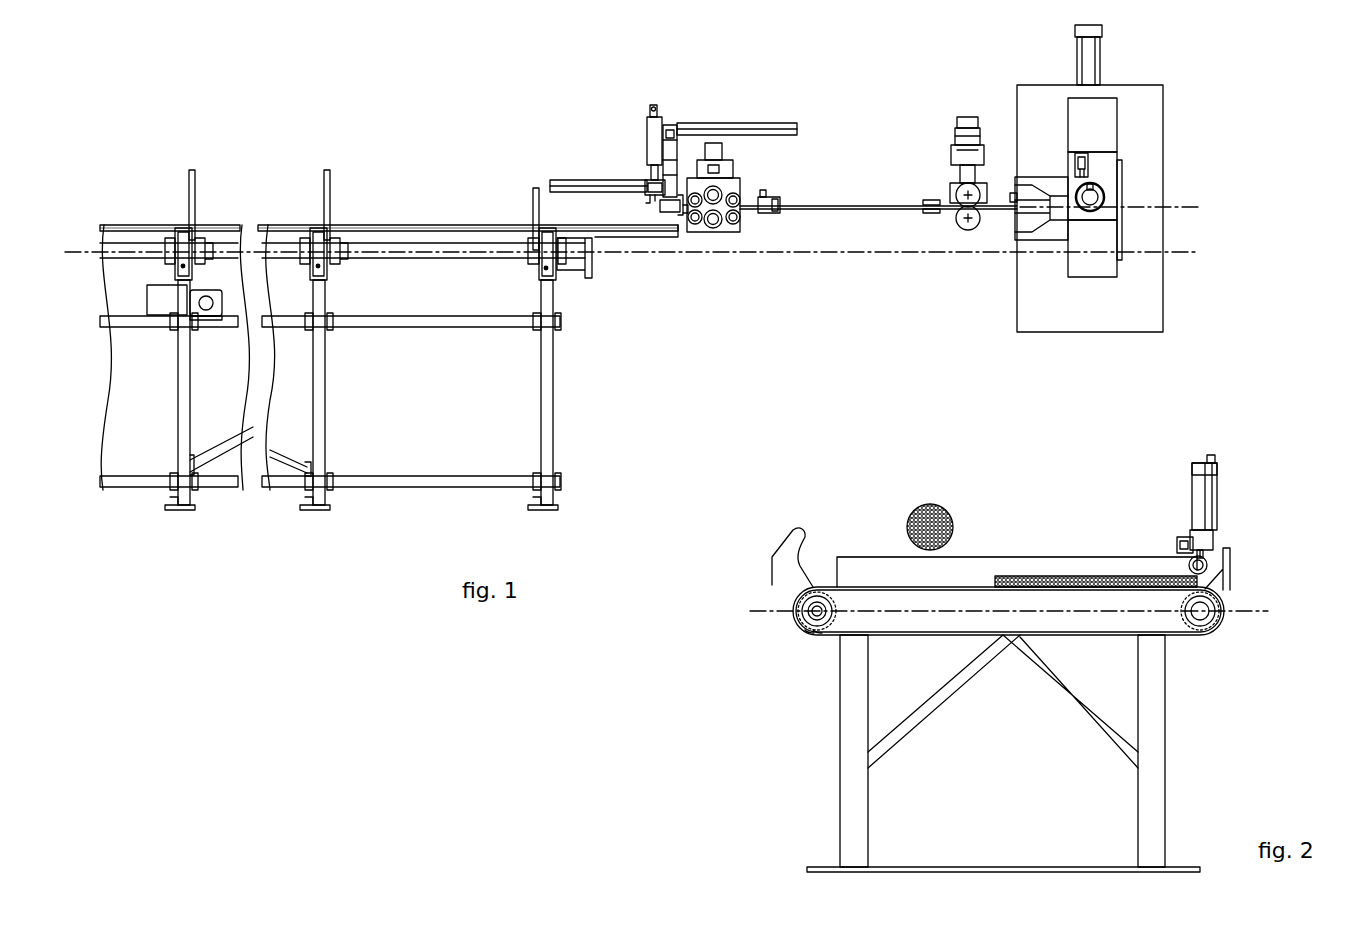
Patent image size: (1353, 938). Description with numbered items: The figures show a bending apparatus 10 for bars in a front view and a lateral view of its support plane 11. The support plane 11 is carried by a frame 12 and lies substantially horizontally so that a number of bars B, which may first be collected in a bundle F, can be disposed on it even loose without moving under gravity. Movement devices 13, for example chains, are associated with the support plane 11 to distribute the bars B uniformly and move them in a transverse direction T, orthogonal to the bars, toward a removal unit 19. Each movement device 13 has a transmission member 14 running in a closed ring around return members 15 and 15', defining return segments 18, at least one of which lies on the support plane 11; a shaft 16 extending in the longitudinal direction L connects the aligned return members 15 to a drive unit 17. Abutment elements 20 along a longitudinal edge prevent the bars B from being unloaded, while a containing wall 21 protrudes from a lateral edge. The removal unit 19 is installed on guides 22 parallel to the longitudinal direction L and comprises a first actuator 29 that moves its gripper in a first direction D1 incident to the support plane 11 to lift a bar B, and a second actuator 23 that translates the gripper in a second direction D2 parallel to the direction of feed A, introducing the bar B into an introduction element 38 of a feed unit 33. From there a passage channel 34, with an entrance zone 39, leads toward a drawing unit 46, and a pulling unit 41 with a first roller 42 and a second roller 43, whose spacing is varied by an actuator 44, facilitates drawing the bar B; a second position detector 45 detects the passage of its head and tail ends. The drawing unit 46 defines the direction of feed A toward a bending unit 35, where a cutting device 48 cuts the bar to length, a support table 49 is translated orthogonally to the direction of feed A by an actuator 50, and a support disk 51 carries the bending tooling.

In FIG. 1, the bending apparatus 10 is at (380, 114).
In FIG. 1, the support plane 11 is at (155, 220).
In FIG. 2, the support plane 11 is at (858, 583).
In FIG. 1, the frame 12 is at (557, 405).
In FIG. 2, the frame 12 is at (1172, 728).
In FIG. 1, the movement devices 13 is at (205, 272).
In FIG. 2, the movement devices 13 is at (815, 645).
In FIG. 2, the transmission member 14 is at (1050, 640).
In FIG. 1, the return members 15 is at (309, 303).
In FIG. 2, the return members 15 is at (803, 628).
In FIG. 2, the return members 15' is at (1215, 633).
In FIG. 1, the shaft 16 is at (470, 259).
In FIG. 1, the drive unit 17 is at (143, 299).
In FIG. 2, the return segments 18 is at (898, 585).
In FIG. 1, the removal unit 19 is at (636, 98).
In FIG. 2, the removal unit 19 is at (1222, 470).
In FIG. 1, the abutment elements 20 is at (194, 203).
In FIG. 2, the abutment elements 20 is at (1219, 577).
In FIG. 1, the containing wall 21 is at (688, 228).
In FIG. 2, the containing wall 21 is at (985, 566).
In FIG. 1, the guides 22 is at (583, 184).
In FIG. 1, the second actuator 23 is at (752, 118).
In FIG. 1, the first actuator 29 is at (655, 135).
In FIG. 1, the feed unit 33 is at (738, 232).
In FIG. 1, the passage channel 34 is at (863, 210).
In FIG. 1, the bending unit 35 is at (1133, 165).
In FIG. 1, the introduction element 38 is at (670, 215).
In FIG. 2, the introduction element 38 is at (1214, 562).
In FIG. 1, the entrance zone 39 is at (776, 200).
In FIG. 1, the pulling unit 41 is at (969, 236).
In FIG. 1, the first roller 42 is at (964, 219).
In FIG. 1, the second roller 43 is at (964, 193).
In FIG. 1, the actuator 44 is at (967, 114).
In FIG. 1, the second position detector 45 is at (1012, 193).
In FIG. 1, the drawing unit 46 is at (1038, 228).
In FIG. 1, the cutting device 48 is at (1068, 165).
In FIG. 1, the support table 49 is at (1102, 160).
In FIG. 1, the actuator 50 is at (1088, 50).
In FIG. 1, the support disk 51 is at (1100, 196).
In FIG. 1, the direction of feed A is at (1188, 207).
In FIG. 1, the longitudinal direction L is at (1184, 252).
In FIG. 2, the transverse direction T is at (1265, 613).
In FIG. 1, the bars B is at (400, 226).
In FIG. 2, the bars B is at (950, 516).
In FIG. 2, the bundle F is at (928, 494).
In FIG. 1, the first direction D1 is at (632, 160).
In FIG. 1, the second direction D2 is at (637, 170).